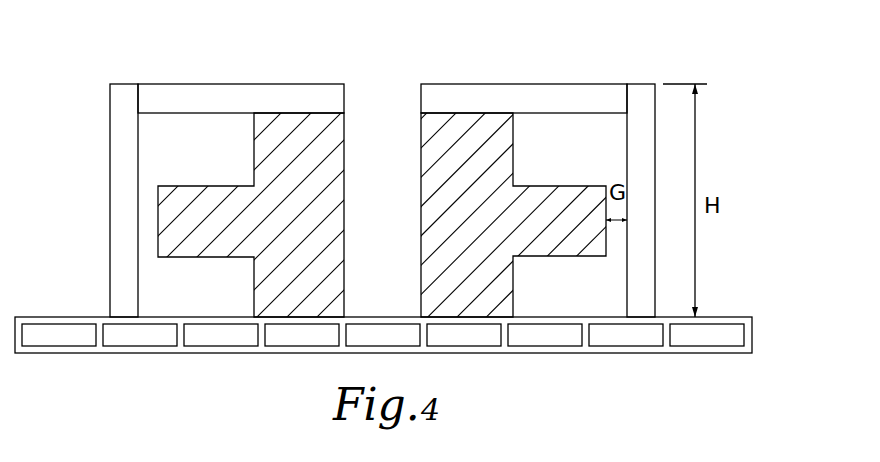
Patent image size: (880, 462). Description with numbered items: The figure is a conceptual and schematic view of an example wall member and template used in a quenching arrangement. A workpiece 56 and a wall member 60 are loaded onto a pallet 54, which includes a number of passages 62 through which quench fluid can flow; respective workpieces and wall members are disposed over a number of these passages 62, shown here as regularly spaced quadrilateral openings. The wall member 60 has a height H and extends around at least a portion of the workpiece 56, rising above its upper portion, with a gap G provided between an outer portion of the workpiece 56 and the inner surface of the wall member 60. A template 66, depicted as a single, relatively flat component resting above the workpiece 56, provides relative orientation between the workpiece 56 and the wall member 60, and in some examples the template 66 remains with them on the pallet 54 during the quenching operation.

The pallet 54 is at (752, 330).
The workpiece 56 is at (175, 226).
The wall member 60 is at (110, 132).
The passage 62 is at (553, 333).
The template 66 is at (186, 84).